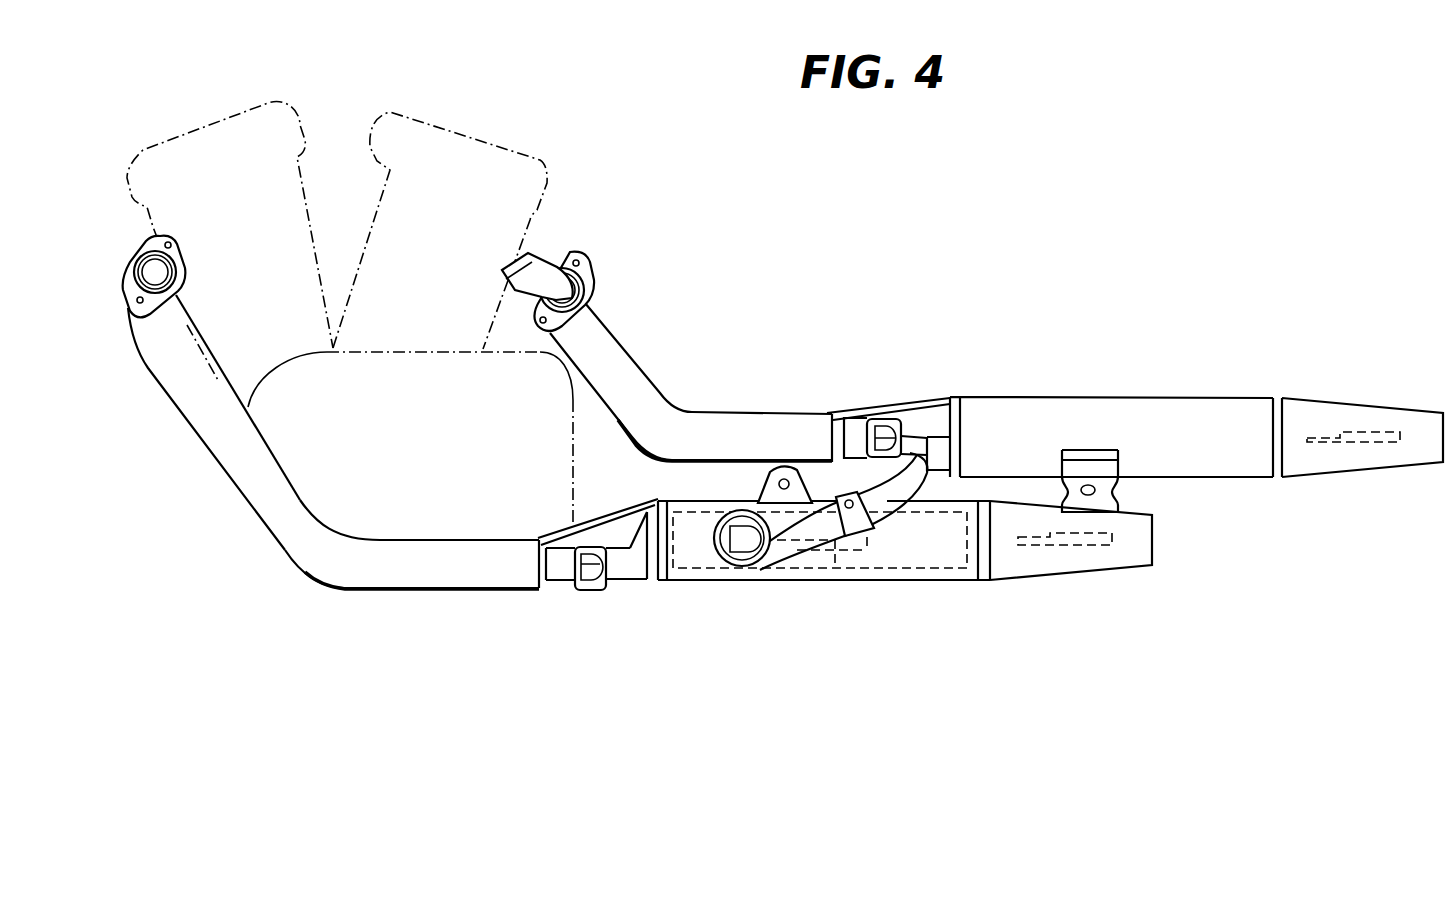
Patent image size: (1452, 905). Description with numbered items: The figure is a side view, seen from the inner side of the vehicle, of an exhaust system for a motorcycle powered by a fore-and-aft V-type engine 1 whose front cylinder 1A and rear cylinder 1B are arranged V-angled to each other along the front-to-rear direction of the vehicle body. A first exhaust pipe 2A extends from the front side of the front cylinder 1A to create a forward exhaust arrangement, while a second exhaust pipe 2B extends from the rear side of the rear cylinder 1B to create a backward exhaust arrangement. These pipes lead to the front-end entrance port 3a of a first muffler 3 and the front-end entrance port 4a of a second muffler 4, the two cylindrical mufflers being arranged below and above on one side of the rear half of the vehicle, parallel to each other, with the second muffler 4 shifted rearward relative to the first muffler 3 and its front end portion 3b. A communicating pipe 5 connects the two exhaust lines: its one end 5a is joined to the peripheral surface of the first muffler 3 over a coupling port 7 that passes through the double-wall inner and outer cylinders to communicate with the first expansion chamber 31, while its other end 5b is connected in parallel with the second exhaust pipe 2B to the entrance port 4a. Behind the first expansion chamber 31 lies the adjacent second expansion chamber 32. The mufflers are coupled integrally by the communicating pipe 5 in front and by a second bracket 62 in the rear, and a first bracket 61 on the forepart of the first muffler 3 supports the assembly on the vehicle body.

The front cylinder 1A is at (207, 137).
The rear cylinder 1B is at (487, 157).
The V-type engine 1 is at (412, 530).
The first exhaust pipe 2A is at (280, 487).
The second exhaust pipe 2B is at (610, 358).
The first muffler 3 is at (897, 573).
The front-end entrance port of first muffler 3a is at (533, 540).
The muffler front end portion 3b is at (697, 573).
The first expansion chamber 31 is at (673, 583).
The second expansion chamber 32 is at (952, 580).
The second muffler 4 is at (1172, 396).
The front-end entrance port of second muffler 4a is at (828, 414).
The communicating pipe 5 is at (817, 540).
The one end of communicating pipe 5a is at (777, 543).
The other end of communicating pipe 5b is at (910, 457).
The coupling port 7 is at (740, 556).
The first bracket 61 is at (767, 473).
The second bracket 62 is at (1094, 503).